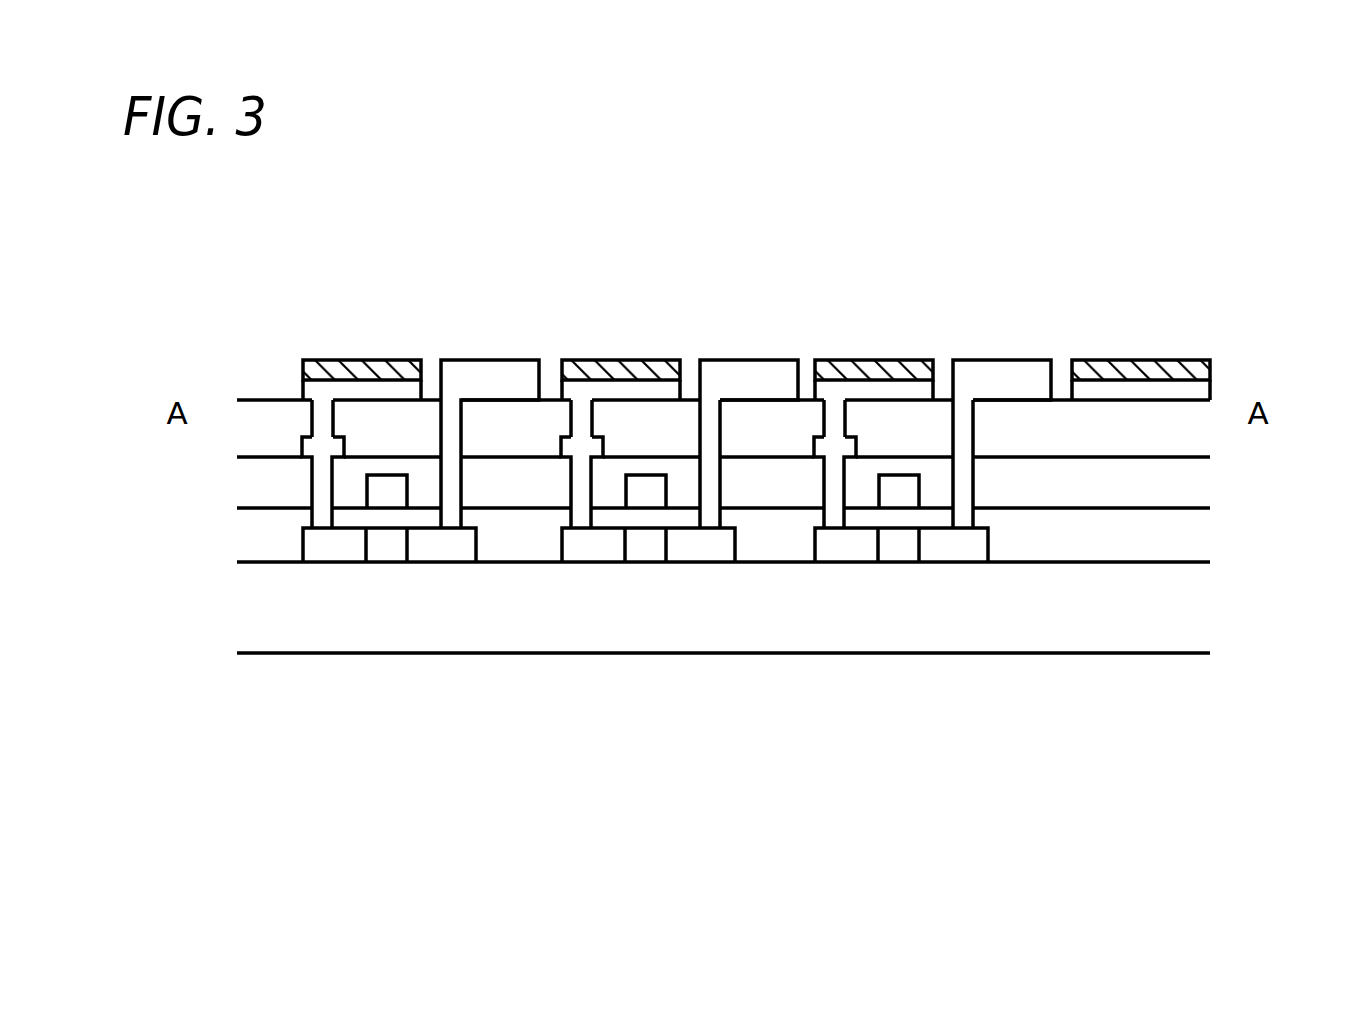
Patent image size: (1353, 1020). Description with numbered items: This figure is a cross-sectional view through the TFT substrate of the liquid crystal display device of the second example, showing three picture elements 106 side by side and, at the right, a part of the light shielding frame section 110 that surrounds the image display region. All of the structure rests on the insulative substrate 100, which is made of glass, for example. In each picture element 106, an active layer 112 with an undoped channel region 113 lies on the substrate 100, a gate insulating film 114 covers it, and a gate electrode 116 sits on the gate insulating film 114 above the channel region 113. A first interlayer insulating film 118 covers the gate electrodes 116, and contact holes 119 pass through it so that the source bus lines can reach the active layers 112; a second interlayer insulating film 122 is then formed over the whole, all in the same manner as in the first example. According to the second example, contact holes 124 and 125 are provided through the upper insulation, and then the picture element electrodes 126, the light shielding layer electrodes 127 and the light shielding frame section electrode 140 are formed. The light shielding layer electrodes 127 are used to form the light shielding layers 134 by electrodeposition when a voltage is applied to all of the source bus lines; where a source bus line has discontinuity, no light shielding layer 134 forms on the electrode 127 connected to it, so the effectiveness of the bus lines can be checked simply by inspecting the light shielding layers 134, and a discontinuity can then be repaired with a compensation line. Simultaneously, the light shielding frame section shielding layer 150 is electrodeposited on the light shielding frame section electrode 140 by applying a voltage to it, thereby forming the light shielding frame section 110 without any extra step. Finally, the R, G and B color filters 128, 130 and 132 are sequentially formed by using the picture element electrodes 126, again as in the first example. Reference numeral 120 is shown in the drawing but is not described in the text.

The insulative substrate 100 is at (890, 637).
The picture elements 106 is at (1057, 216).
The light shielding frame section 110 is at (1218, 227).
The active layers 112 is at (433, 550).
The undoped channel regions 113 is at (390, 550).
The gate insulating films 114 is at (608, 517).
The gate electrodes 116 is at (644, 493).
The first interlayer insulating film 118 is at (758, 492).
The contact holes 119 is at (310, 480).
The drain electrode 120 is at (835, 465).
The second interlayer insulating film 122 is at (1097, 435).
The contact hole 124 is at (973, 435).
The contact hole 125 is at (330, 417).
The picture element electrodes 126 is at (720, 390).
The light shielding layer electrodes 127 is at (378, 390).
The R color filter 128 is at (500, 388).
The G color filter 130 is at (760, 370).
The B color filter 132 is at (990, 370).
The light shielding layers 134 is at (897, 370).
The light shielding frame section electrode 140 is at (1163, 388).
The light shielding frame section shielding layer 150 is at (1120, 370).